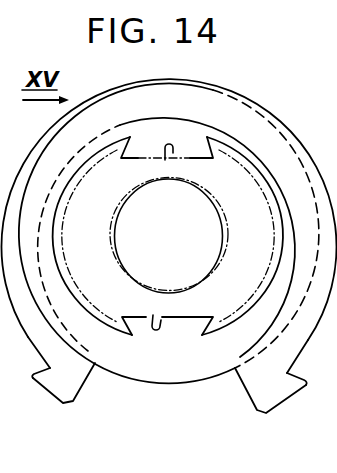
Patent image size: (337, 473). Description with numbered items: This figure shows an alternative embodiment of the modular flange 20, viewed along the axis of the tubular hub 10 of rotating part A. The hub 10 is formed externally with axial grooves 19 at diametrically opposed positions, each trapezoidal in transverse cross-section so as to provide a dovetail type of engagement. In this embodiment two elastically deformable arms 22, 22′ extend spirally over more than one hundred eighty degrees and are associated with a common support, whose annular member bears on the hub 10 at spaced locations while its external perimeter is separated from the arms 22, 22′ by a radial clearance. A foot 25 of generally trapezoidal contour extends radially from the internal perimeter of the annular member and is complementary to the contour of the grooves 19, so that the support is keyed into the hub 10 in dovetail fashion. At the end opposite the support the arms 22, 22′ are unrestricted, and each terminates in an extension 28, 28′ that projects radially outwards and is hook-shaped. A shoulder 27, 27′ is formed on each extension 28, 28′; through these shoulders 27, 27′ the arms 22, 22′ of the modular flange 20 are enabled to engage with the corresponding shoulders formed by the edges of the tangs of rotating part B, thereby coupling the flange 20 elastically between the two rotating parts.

The tubular hub 10 is at (226, 143).
The axial groove 19 is at (165, 160).
The modular flange 20 is at (300, 123).
The elastically deformable arm 22 is at (28, 319).
The elastically deformable arm 22′ is at (311, 318).
The foot 25 is at (193, 322).
The shoulder 27 is at (33, 373).
The shoulder 27′ is at (305, 381).
The extension 28 is at (65, 389).
The extension 28′ is at (263, 398).